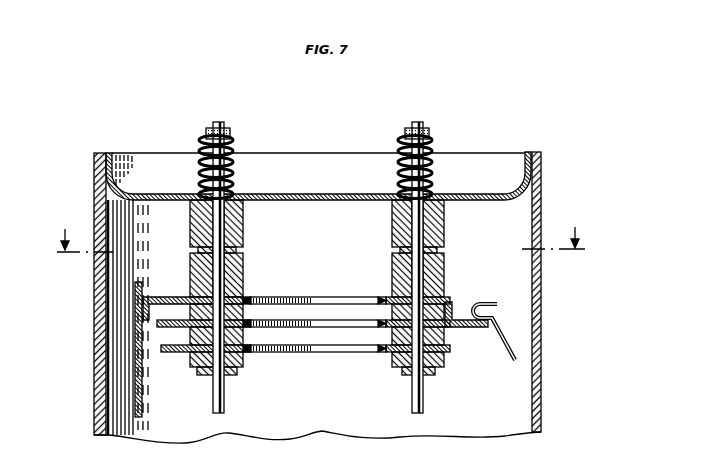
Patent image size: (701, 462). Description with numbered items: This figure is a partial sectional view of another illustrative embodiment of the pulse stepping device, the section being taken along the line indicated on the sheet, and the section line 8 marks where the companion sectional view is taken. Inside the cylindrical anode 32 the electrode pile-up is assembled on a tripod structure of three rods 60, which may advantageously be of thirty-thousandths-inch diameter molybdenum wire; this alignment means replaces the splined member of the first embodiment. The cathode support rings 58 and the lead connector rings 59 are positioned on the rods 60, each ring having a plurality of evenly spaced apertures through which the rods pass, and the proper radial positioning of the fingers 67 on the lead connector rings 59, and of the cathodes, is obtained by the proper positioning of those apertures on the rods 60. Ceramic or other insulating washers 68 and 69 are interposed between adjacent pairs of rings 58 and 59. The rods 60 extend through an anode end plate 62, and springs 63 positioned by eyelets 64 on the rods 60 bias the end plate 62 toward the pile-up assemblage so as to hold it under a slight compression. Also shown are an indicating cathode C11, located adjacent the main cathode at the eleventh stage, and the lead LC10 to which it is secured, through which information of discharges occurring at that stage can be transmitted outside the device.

The cylindrical anode 32 is at (542, 376).
The anode end plate 62 is at (486, 193).
The spring 63 is at (236, 158).
The eyelet 64 is at (224, 128).
The insulating washer 69 is at (392, 256).
The finger 67 is at (165, 297).
The insulating washer 68 is at (192, 336).
The cathode support ring 58 is at (263, 345).
The lead connector ring 59 is at (386, 345).
The indicating cathode C11 is at (505, 332).
The rod 60 is at (229, 394).
The lead LC10 is at (141, 340).
The section line 8- 8 is at (321, 228).